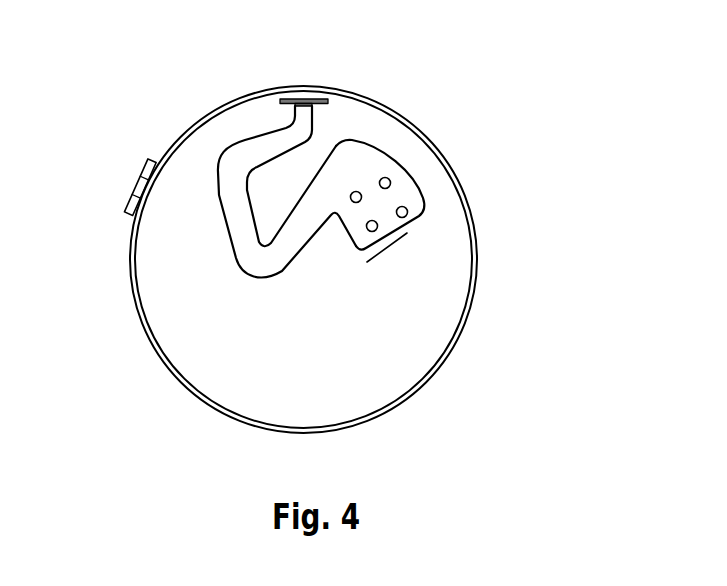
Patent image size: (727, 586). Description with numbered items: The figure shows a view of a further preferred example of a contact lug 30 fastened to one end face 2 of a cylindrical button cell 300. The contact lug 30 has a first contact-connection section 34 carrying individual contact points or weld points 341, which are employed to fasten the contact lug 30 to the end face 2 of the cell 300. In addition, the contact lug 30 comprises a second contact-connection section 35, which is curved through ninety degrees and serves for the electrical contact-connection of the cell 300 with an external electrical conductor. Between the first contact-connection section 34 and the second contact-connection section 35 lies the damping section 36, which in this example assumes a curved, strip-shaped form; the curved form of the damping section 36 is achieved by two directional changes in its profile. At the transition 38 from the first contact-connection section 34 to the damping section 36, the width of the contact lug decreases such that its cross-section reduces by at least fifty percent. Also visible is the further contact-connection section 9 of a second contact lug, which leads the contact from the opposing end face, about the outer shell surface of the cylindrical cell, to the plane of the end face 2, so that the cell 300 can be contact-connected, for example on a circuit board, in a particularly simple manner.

The end face 2 is at (377, 373).
The further contact-connection section 9 is at (137, 183).
The contact lug 30 is at (338, 128).
The first contact-connection section 34 is at (432, 223).
The weld points 341 is at (354, 202).
The second contact-connection section 35 is at (308, 99).
The damping section 36 is at (237, 232).
The transition 38 is at (328, 222).
The button cell 300 is at (156, 76).